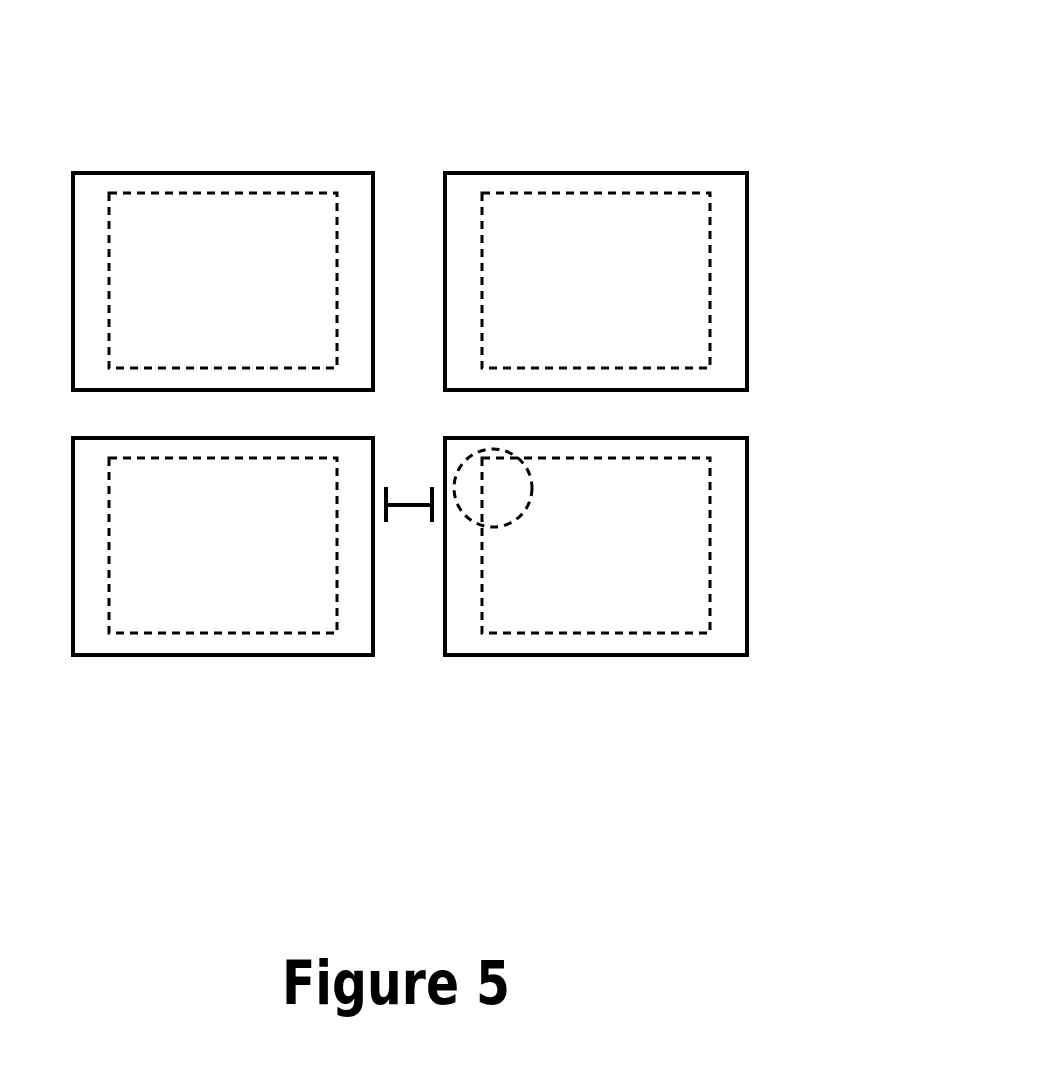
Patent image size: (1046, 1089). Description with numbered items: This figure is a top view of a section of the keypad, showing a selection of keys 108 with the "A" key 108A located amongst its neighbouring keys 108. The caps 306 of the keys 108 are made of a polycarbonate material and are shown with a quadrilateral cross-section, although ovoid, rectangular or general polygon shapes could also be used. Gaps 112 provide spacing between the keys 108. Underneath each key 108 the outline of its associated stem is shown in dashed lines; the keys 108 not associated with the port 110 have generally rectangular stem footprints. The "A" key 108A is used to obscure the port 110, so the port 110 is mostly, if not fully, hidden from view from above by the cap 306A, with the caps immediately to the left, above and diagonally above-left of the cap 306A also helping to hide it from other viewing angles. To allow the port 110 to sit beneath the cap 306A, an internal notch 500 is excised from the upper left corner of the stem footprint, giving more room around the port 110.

The keys 108 is at (92, 183).
The "A" key 108A is at (733, 638).
The caps 306 is at (700, 241).
The cap 306A is at (690, 545).
The internal notch 500 is at (520, 457).
The port 110 is at (483, 490).
The gaps 112 is at (413, 486).